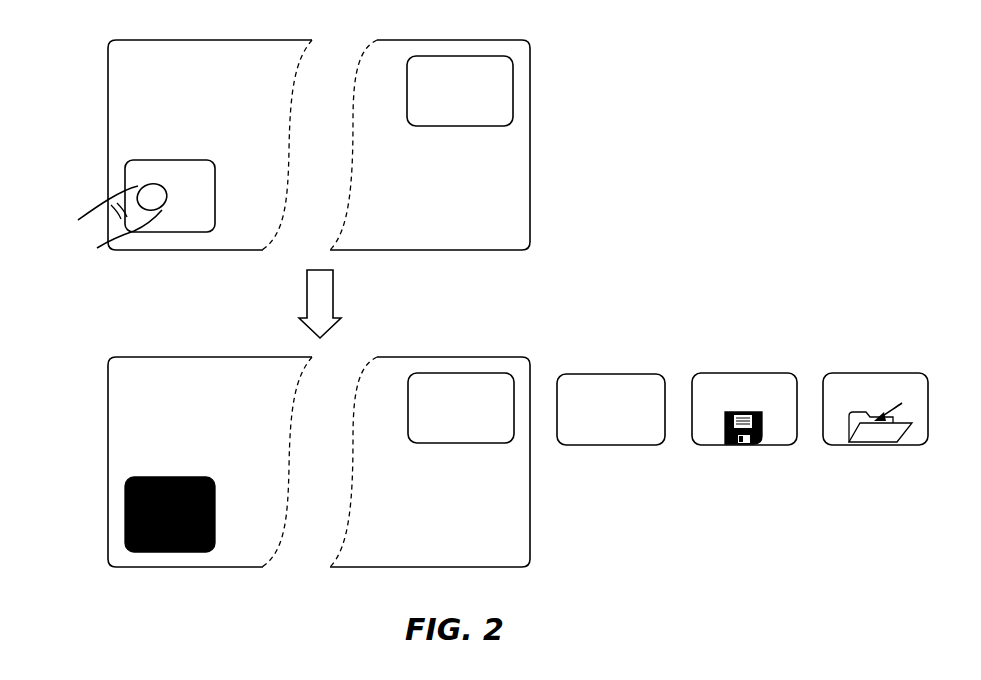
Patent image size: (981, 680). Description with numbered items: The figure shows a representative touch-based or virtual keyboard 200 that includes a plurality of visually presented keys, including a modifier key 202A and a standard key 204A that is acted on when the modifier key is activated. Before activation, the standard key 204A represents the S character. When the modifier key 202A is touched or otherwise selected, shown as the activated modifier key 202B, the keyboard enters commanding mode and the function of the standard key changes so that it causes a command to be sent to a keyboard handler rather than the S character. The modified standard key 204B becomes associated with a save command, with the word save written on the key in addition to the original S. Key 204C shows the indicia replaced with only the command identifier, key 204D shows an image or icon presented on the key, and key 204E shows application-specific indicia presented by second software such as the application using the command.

The virtual keyboard 200 is at (90, 38).
The modifier key 202A is at (170, 160).
The modifier key 202B is at (170, 477).
The standard key 204A is at (458, 127).
The modified standard key 204B is at (460, 444).
The key 204C is at (612, 446).
The key 204D is at (744, 446).
The key 204E is at (877, 446).